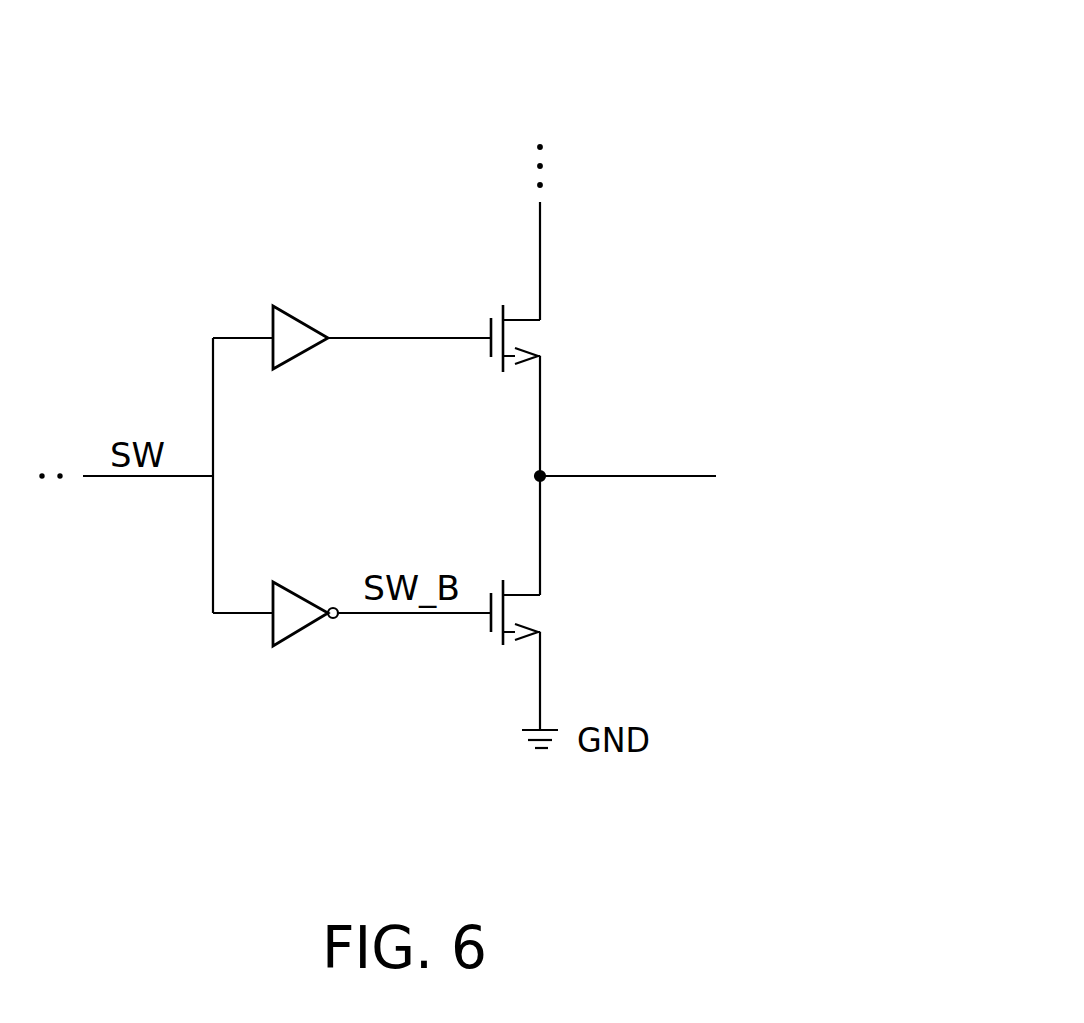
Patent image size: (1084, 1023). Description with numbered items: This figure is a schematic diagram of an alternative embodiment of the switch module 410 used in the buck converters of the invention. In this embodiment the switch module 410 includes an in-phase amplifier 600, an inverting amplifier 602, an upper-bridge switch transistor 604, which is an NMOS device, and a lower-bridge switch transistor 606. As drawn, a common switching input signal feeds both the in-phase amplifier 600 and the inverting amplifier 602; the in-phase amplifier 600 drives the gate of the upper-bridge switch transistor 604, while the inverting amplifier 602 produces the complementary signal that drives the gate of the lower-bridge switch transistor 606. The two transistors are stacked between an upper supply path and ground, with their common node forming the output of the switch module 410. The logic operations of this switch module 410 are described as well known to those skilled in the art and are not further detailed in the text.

The switch module 410 is at (732, 142).
The in-phase amplifier 600 is at (300, 320).
The inverting amplifier 602 is at (300, 592).
The upper-bridge switch transistor 604 is at (497, 312).
The lower-bridge switch transistor 606 is at (495, 642).